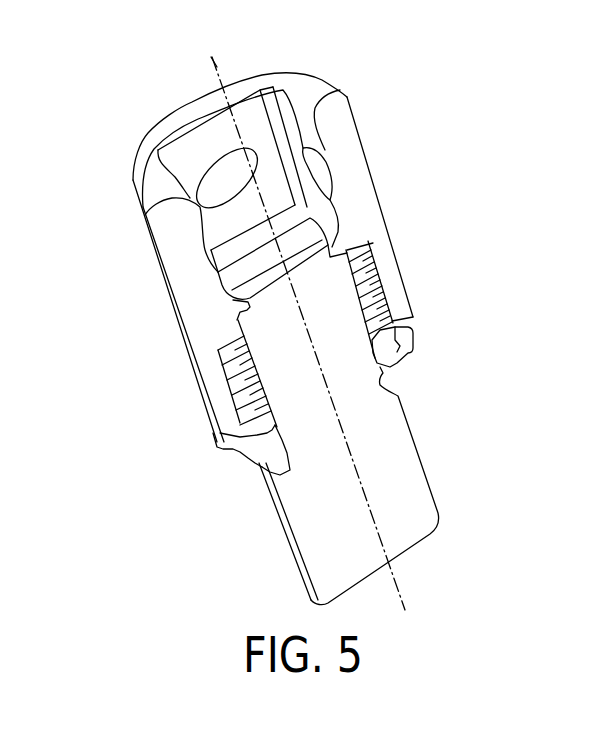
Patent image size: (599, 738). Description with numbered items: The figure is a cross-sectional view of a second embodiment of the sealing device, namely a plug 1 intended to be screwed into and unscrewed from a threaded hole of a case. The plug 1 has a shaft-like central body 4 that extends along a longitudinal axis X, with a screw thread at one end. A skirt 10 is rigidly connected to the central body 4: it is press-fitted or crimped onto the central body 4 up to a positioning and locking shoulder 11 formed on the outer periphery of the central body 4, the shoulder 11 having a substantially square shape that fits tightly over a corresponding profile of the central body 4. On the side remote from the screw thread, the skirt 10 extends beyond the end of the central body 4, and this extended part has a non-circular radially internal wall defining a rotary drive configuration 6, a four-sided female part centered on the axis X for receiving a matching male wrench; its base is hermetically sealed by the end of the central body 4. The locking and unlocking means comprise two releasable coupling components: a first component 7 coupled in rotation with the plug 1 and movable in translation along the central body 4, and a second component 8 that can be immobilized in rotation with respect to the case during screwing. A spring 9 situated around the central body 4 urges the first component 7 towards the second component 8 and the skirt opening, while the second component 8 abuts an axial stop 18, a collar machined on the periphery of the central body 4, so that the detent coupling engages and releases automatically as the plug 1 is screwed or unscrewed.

The plug 1 is at (358, 55).
The longitudinal axis X is at (211, 68).
The central body 4 is at (351, 418).
The rotary drive configuration 6 is at (275, 196).
The first component 7 is at (388, 310).
The second component 8 is at (400, 345).
The spring 9 is at (220, 357).
The skirt 10 is at (338, 120).
The positioning and locking shoulder 11 is at (242, 310).
The axial stop 18 is at (240, 453).